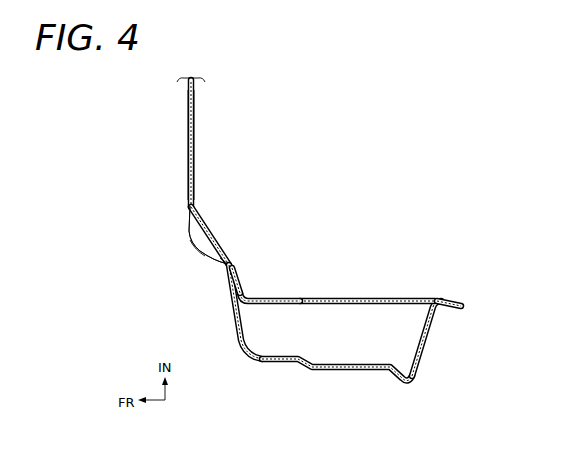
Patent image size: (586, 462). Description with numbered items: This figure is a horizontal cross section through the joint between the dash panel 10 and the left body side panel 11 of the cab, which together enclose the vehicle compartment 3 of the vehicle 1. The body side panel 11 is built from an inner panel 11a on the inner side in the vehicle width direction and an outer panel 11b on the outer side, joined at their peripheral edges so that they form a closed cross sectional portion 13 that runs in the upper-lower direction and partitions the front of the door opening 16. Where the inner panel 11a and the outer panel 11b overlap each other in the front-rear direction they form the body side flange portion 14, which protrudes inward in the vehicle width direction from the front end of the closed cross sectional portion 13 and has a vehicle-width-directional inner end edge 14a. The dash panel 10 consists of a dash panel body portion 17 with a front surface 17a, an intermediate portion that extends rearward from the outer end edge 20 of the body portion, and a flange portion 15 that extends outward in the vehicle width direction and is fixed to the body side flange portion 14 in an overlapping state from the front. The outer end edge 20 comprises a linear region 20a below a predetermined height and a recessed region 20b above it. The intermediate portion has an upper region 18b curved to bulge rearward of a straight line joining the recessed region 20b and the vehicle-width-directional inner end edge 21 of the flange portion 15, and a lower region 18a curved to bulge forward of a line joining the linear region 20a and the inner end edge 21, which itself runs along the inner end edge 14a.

The vehicle body structure 1 is at (97, 337).
The vehicle compartment 3 is at (504, 142).
The dash panel 10 is at (187, 98).
The body side panel 11 is at (346, 330).
The inner panel 11a is at (367, 297).
The outer panel 11b is at (370, 370).
The closed cross sectional portion 13 is at (427, 347).
The body side flange portion 14 is at (244, 271).
The vehicle-width-directional inner end edge of body side flange portion 14a is at (238, 267).
The flange portion 15 is at (228, 283).
The door opening 16 is at (464, 308).
The dash panel body portion 17 is at (188, 127).
The front surface of dash panel body portion 17a is at (188, 149).
The region of intermediate portion extending downward 18a is at (191, 247).
The region of intermediate portion extending upward 18b is at (204, 222).
The outer end edge 20 is at (208, 235).
The linear region 20a is at (188, 232).
The recessed region 20b is at (189, 206).
The vehicle-width-directional inner end edge of flange portion 21 is at (228, 264).